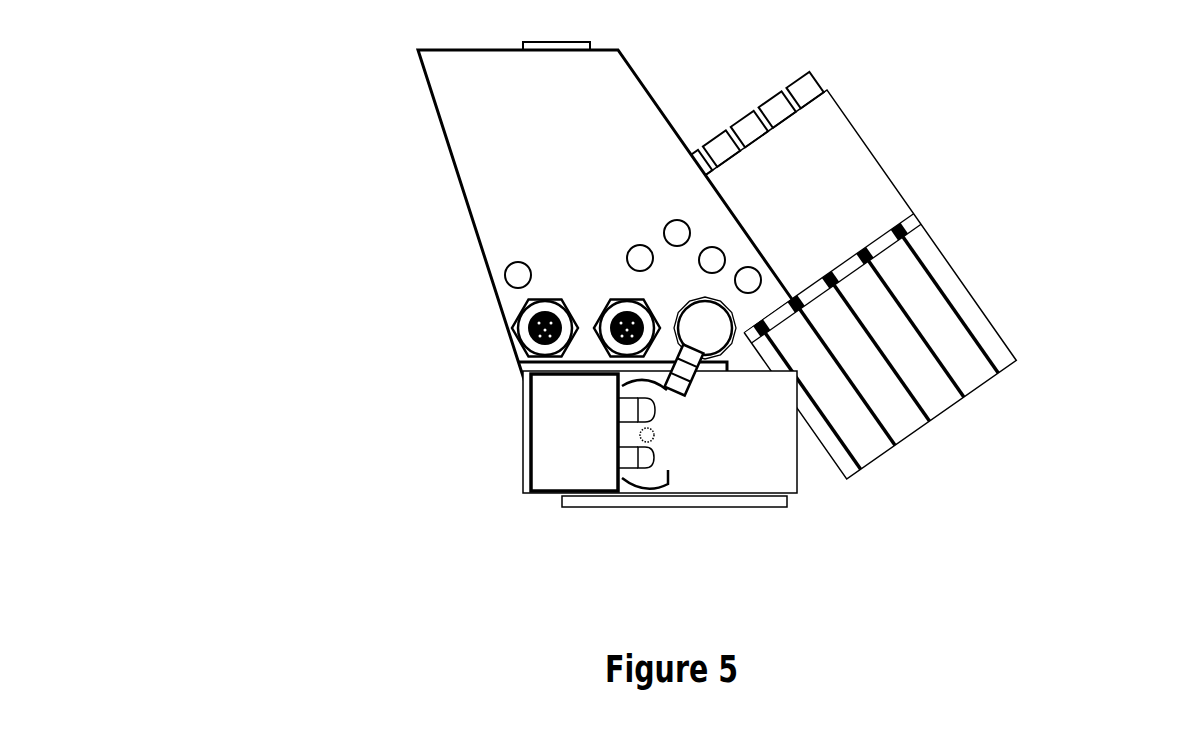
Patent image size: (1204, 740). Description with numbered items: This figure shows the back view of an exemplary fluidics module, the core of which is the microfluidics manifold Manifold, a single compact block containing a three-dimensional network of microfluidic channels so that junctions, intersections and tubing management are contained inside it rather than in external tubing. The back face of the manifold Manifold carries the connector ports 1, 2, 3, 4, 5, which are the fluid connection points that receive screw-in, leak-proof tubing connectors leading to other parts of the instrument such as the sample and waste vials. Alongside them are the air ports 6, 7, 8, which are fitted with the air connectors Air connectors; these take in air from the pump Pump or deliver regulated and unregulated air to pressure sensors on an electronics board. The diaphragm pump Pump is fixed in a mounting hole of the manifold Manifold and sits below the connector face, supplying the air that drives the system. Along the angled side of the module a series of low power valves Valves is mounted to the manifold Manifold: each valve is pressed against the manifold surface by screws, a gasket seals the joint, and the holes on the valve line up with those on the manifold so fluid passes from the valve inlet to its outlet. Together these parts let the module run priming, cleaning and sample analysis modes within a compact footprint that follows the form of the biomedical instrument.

The manifold Manifold is at (472, 220).
The air connectors Air connectors is at (404, 328).
The valves Valves is at (957, 328).
The pump Pump is at (555, 442).
The connector port 1 is at (518, 270).
The connector port 2 is at (675, 227).
The connector port 3 is at (702, 328).
The connector port 4 is at (711, 254).
The connector port 5 is at (638, 252).
The air port 6 is at (544, 327).
The air port 7 is at (624, 328).
The air port 8 is at (747, 274).